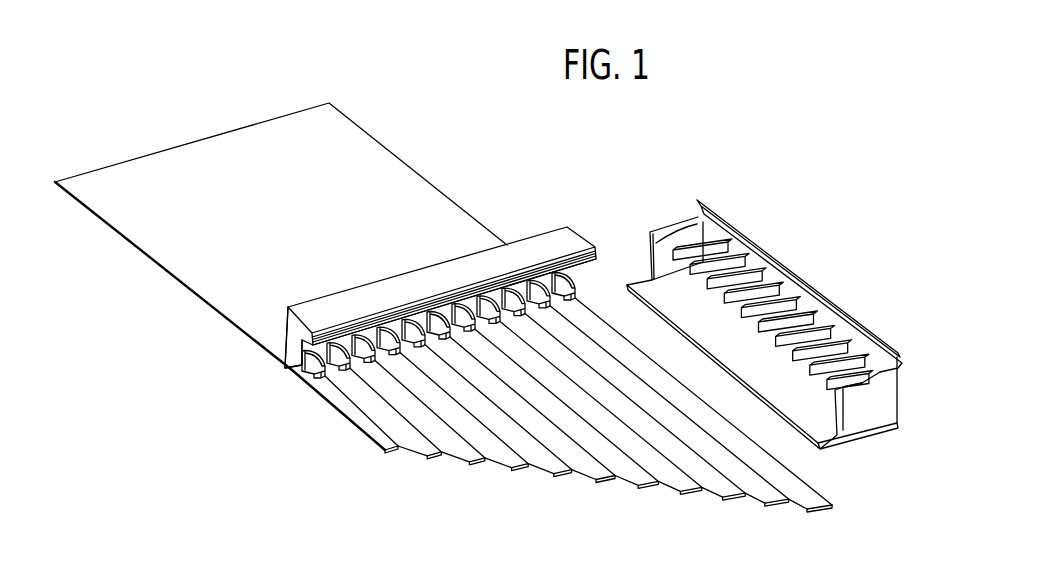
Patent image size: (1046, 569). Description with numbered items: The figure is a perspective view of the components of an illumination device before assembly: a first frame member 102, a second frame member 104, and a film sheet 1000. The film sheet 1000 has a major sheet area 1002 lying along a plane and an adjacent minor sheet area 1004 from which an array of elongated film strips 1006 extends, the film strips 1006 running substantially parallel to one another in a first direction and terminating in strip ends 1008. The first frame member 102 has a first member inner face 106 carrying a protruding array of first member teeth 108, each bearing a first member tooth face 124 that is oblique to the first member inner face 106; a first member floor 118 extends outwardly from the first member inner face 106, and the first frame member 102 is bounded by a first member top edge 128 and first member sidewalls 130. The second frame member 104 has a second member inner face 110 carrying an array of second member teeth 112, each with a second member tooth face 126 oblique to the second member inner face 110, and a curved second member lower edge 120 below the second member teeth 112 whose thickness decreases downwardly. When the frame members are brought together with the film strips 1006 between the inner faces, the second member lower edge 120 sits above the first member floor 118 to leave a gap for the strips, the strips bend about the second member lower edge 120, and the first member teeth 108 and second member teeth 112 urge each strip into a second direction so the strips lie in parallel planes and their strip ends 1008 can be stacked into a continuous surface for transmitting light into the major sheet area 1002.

The film sheet 1000 is at (368, 152).
The major sheet area 1002 is at (397, 180).
The minor sheet area 1004 is at (313, 379).
The film strips 1006 is at (362, 415).
The strip ends 1008 is at (397, 447).
The second frame member 104 is at (530, 243).
The second member inner face 110 is at (571, 263).
The second member teeth 112 is at (575, 283).
The second member lower edge 120 is at (288, 368).
The second member tooth face 126 is at (567, 290).
The first frame member 102 is at (753, 235).
The first member floor 118 is at (728, 342).
The first member top edge 128 is at (725, 218).
The first member sidewalls 130 is at (667, 253).
The first member teeth 108 is at (742, 275).
The first member inner face 106 is at (745, 305).
The first member tooth face 124 is at (800, 340).